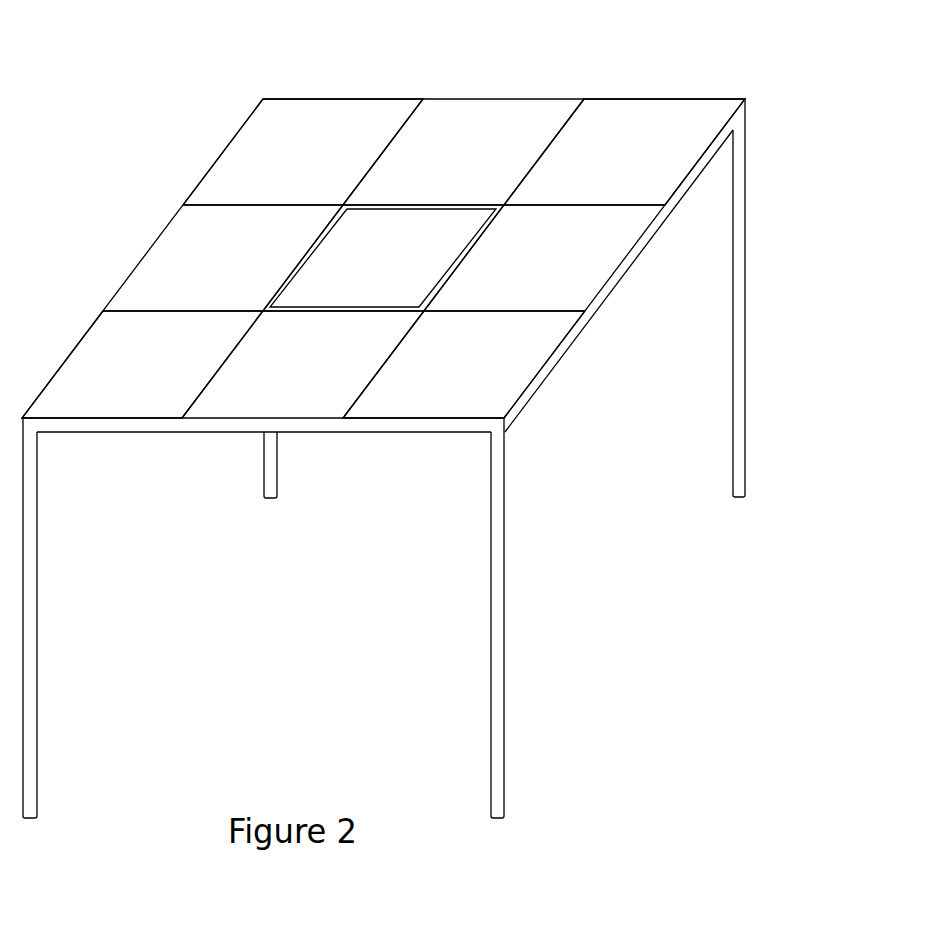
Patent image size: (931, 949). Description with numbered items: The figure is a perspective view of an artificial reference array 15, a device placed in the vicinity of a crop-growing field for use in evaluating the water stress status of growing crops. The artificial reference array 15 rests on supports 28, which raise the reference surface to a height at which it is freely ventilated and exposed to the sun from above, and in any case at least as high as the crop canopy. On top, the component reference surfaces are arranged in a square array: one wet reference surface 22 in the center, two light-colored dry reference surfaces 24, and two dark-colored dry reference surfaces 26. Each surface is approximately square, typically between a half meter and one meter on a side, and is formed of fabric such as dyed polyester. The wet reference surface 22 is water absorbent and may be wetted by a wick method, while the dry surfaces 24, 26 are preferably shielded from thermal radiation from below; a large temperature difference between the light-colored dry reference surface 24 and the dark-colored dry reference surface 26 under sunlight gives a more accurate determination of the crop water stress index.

The artificial reference array 15 is at (764, 79).
The wet reference surface 22 is at (450, 223).
The light-colored dry reference surface 24 is at (410, 365).
The dark-colored dry reference surface 26 is at (183, 365).
The supports 28 is at (498, 632).